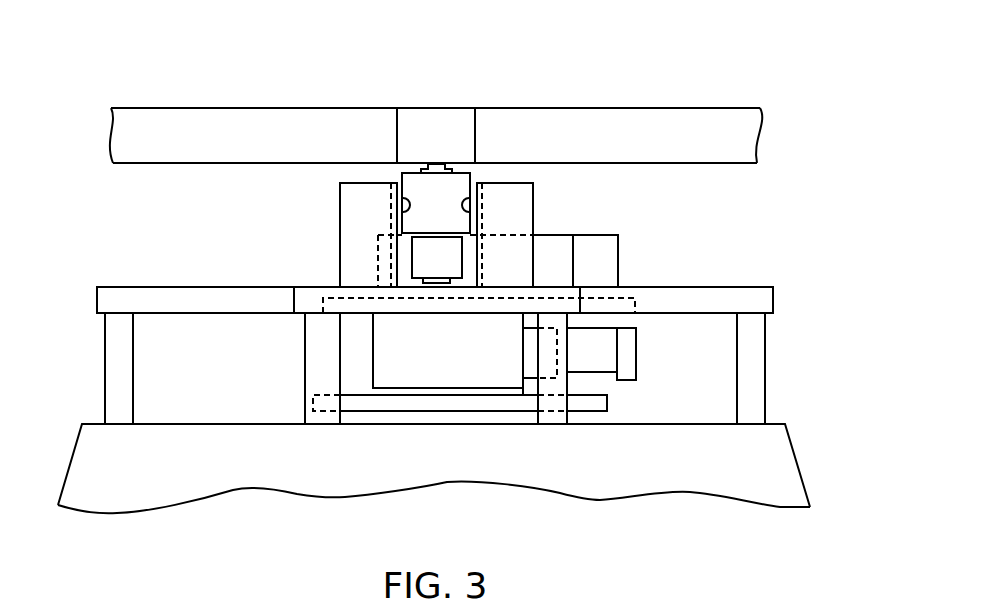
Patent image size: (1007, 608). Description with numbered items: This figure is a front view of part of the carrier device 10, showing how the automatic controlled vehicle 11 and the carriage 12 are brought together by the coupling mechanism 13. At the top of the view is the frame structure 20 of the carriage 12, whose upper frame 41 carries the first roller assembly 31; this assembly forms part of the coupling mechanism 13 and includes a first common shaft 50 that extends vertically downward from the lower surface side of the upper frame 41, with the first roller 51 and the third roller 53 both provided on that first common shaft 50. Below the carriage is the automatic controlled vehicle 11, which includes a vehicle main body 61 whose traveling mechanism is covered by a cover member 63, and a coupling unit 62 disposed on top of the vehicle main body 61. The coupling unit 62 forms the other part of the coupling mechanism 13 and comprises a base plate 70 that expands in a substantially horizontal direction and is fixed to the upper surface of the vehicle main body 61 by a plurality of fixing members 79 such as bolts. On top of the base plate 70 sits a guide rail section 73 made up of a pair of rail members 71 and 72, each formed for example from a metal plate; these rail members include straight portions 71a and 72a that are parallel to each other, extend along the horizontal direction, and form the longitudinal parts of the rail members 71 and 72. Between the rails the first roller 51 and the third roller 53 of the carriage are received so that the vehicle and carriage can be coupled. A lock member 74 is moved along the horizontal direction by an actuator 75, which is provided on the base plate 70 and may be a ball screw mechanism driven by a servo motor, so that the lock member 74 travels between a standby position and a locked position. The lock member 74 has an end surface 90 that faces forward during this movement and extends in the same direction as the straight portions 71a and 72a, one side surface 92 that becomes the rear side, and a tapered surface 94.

The carrier device 10 is at (703, 47).
The automatic controlled vehicle 11 is at (785, 513).
The carriage 12 is at (778, 142).
The coupling mechanism 13 is at (308, 210).
The frame structure 20 is at (213, 100).
The first roller assembly 31 is at (476, 180).
The upper frame 41 is at (418, 112).
The first common shaft 50 is at (432, 163).
The first roller 51 is at (457, 188).
The third roller 53 is at (430, 258).
The vehicle main body 61 is at (800, 468).
The coupling unit 62 is at (753, 243).
The cover member 63 is at (437, 470).
The base plate 70 is at (745, 297).
The rail member 71 is at (352, 197).
The straight portion 71a is at (391, 190).
The rail member 72 is at (527, 200).
The straight portion 72a is at (494, 190).
The guide rail section 73 is at (542, 218).
The lock member 74 is at (615, 275).
The actuator 75 is at (615, 360).
The fixing members 79 is at (110, 375).
The end surface 90 is at (378, 240).
The one side surface 92 is at (600, 250).
The tapered surface 94 is at (470, 290).